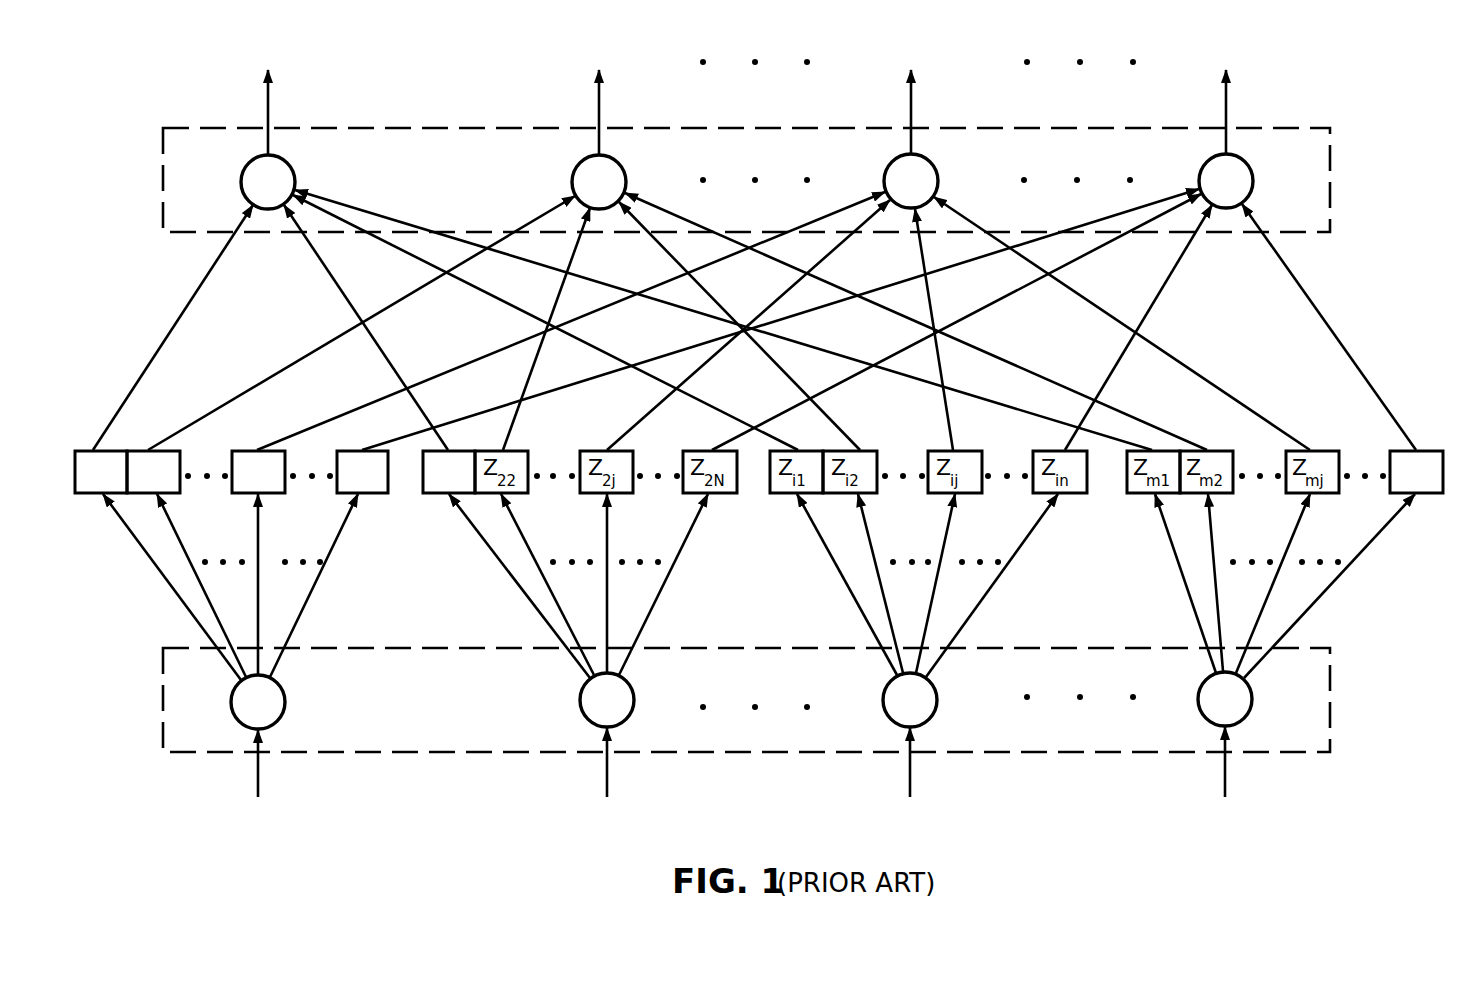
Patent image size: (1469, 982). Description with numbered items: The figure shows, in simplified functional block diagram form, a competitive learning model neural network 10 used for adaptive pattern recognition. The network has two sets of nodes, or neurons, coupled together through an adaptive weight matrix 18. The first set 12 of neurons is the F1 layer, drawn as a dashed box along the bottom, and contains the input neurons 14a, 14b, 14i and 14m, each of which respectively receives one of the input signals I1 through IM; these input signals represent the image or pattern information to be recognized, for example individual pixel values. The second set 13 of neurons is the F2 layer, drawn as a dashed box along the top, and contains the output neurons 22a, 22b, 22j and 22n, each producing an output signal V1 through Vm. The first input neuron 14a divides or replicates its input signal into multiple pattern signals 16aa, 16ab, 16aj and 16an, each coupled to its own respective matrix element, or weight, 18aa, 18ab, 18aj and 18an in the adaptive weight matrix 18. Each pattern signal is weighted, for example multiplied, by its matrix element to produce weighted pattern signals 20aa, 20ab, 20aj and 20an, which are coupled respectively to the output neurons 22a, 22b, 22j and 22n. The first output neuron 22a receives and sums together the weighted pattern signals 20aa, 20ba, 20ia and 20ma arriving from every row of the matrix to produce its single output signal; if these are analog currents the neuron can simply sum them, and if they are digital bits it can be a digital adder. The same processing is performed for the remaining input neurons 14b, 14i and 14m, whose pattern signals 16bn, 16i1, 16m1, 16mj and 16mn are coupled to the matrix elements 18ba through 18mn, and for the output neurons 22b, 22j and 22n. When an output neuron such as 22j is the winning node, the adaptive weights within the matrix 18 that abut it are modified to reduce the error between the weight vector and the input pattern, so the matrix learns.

The CLM network 10 is at (170, 776).
The first set of neurons 12 is at (1330, 738).
The second set of neurons 13 is at (1333, 128).
The first input neuron 14a is at (232, 714).
The input neuron 14b is at (583, 712).
The input neuron 14i is at (886, 712).
The input neuron 14m is at (1200, 714).
The pattern signal 16aa is at (152, 568).
The pattern signal 16ab is at (203, 540).
The pattern signal 16aj is at (262, 543).
The pattern signal 16an is at (360, 527).
The pattern signal 16bn is at (667, 587).
The pattern signal 16i1 is at (810, 538).
The pattern signal 16m1 is at (1162, 535).
The pattern signal 16mj is at (1283, 553).
The pattern signal 16mn is at (1357, 553).
The adaptive weight matrix 18 is at (720, 503).
The matrix element 18aa is at (85, 450).
The matrix element 18ab is at (138, 450).
The matrix element 18aj is at (247, 450).
The matrix element 18an is at (355, 449).
The matrix element 18ba is at (453, 450).
The matrix element 18mn is at (1383, 448).
The weighted pattern signal 20aa is at (153, 353).
The weighted pattern signal 20ab is at (240, 388).
The weighted pattern signal 20aj is at (423, 377).
The weighted pattern signal 20an is at (663, 352).
The weighted pattern signal 20ba is at (300, 252).
The weighted pattern signal 20ia is at (380, 255).
The weighted pattern signal 20ma is at (507, 258).
The first output neuron 22a is at (243, 166).
The output neuron 22b is at (575, 168).
The output neuron 22j is at (888, 172).
The output neuron 22n is at (1200, 168).